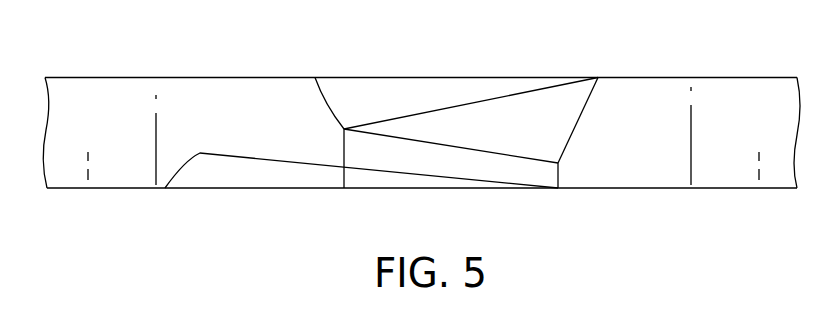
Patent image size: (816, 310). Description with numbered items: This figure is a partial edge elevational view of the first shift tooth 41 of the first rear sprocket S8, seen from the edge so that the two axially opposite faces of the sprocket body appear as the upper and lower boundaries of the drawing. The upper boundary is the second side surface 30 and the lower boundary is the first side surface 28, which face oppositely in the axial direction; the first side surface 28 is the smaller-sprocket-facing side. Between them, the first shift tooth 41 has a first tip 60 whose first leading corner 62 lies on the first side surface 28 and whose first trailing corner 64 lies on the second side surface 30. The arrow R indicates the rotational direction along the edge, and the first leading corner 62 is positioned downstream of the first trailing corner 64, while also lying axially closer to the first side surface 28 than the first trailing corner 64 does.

The second side surface 30 is at (642, 77).
The first side surface 28 is at (624, 188).
The first rear sprocket S8 is at (175, 53).
The direction R is at (365, 53).
The first shift tooth 41 is at (475, 77).
The first trailing corner 64 is at (344, 188).
The first tip 60 is at (443, 163).
The first leading corner 62 is at (558, 188).